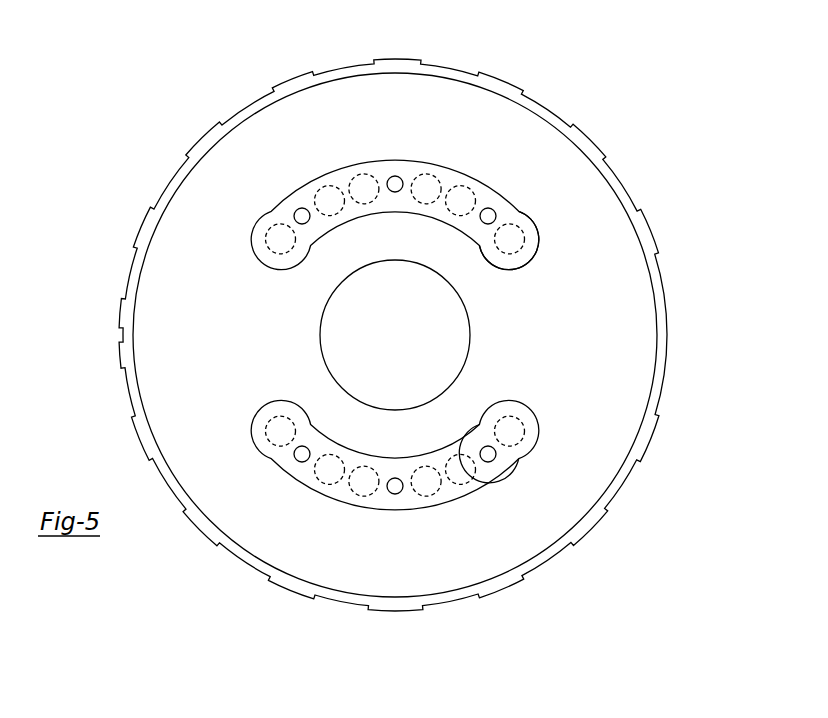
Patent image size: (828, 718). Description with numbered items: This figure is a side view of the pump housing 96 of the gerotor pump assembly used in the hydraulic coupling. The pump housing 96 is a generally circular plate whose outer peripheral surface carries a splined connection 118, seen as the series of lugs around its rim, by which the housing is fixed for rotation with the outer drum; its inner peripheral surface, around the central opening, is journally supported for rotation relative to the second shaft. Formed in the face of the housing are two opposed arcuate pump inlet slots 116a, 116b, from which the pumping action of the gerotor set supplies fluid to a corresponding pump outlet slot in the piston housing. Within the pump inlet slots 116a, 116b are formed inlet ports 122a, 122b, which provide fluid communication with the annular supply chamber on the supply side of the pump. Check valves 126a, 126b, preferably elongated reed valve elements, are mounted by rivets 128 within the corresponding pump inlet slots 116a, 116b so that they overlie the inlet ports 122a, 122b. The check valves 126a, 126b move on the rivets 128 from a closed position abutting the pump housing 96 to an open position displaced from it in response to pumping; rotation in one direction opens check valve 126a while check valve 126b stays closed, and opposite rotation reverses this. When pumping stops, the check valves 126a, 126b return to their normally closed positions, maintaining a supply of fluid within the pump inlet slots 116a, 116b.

The pump housing 96 is at (616, 172).
The splined connection 118 is at (397, 60).
The pump inlet slot 116a is at (448, 174).
The pump inlet slot 116b is at (513, 460).
The inlet port 122a is at (512, 241).
The inlet port 122b is at (514, 430).
The check valve 126a is at (513, 264).
The check valve 126b is at (513, 402).
The rivets 128 is at (496, 217).